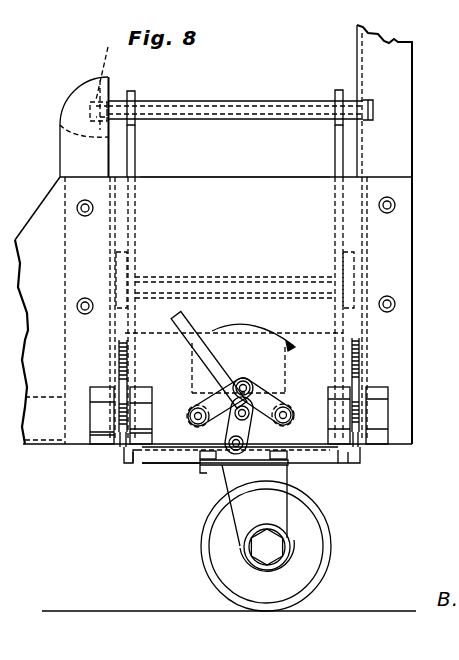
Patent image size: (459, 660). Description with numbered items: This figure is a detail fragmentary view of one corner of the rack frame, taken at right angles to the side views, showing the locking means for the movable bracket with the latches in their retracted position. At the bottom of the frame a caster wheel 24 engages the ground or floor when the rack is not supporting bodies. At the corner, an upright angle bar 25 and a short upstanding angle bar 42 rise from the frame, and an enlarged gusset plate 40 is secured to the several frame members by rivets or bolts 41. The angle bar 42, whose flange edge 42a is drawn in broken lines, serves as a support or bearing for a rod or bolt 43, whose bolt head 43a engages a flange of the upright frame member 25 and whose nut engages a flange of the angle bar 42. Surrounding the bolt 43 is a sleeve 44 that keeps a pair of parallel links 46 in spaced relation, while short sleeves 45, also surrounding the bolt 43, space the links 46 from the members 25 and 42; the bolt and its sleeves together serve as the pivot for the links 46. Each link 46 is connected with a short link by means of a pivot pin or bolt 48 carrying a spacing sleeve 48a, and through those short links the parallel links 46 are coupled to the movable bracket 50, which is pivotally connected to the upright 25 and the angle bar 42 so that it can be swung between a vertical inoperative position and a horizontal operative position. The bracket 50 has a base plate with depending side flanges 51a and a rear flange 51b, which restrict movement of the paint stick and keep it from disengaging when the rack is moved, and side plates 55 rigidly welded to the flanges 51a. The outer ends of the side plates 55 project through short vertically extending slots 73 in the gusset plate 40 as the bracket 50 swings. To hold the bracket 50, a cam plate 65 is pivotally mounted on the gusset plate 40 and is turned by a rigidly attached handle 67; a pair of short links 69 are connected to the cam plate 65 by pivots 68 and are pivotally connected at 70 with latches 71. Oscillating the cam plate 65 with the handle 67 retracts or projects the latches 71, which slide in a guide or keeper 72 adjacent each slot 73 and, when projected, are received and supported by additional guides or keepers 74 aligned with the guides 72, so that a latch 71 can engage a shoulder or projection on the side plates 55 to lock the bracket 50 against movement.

The caster wheel 24 is at (308, 522).
The upright angle bar 25 is at (391, 56).
The gusset plate 40 is at (237, 181).
The rivets or bolts 41 is at (81, 201).
The upstanding angle bar 42 is at (83, 94).
The flange edge 42a is at (62, 123).
The rod or bolt 43 is at (262, 110).
The bolt head 43a is at (87, 79).
The sleeve 44 is at (213, 106).
The short sleeves 45 is at (122, 102).
The parallel links 46 is at (133, 156).
The pivot pin or bolt 48 is at (183, 286).
The spacing sleeve 48a is at (276, 260).
The movable bracket 50 is at (161, 462).
The side flanges 51a is at (128, 463).
The rear flange 51b is at (167, 463).
The side plates 55 is at (132, 462).
The cam plate 65 is at (288, 461).
The handle 67 is at (190, 335).
The pivots 68 is at (241, 381).
The short links 69 is at (255, 382).
The pivotal connection 70 is at (193, 408).
The latches 71 is at (152, 428).
The guide or keeper 72 is at (138, 400).
The vertically extending slots 73 is at (120, 364).
The additional guides or keepers 74 is at (378, 408).